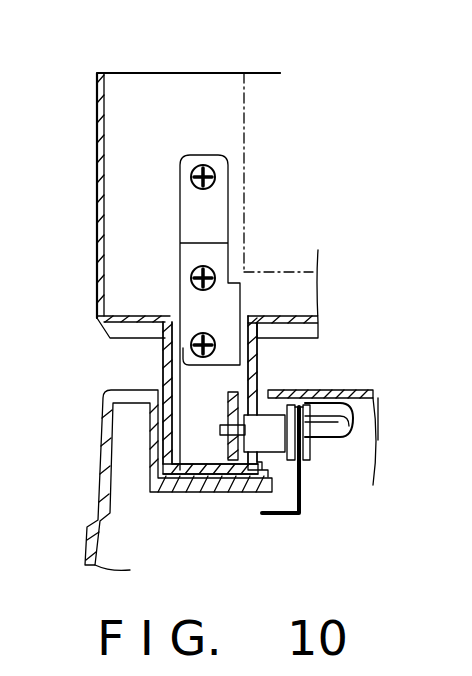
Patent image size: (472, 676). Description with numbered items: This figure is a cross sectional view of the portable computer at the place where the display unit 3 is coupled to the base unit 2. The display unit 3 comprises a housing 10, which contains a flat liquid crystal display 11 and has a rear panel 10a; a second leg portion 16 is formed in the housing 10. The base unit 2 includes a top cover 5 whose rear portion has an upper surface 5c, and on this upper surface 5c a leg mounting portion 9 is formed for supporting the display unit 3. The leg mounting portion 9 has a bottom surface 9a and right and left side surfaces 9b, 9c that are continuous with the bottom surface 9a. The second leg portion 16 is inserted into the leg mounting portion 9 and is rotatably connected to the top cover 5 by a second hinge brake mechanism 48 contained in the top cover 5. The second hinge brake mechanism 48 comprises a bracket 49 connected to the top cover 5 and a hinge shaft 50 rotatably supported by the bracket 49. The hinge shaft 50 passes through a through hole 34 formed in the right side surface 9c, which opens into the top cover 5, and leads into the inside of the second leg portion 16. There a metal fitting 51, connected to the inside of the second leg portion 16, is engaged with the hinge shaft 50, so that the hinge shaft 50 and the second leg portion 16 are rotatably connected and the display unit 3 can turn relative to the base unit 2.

The base unit 2 is at (92, 491).
The display unit 3 is at (96, 111).
The top cover 5 is at (100, 450).
The upper surface 5c is at (368, 394).
The leg mounting portion 9 is at (252, 462).
The bottom surface 9a is at (212, 470).
The left side surface 9b is at (165, 400).
The right side surface 9c is at (283, 392).
The housing 10 is at (125, 255).
The rear panel 10a is at (213, 73).
The liquid crystal display 11 is at (246, 133).
The second leg portion 16 is at (260, 392).
The through hole 34 is at (350, 390).
The second hinge brake mechanism 48 is at (302, 470).
The bracket 49 is at (346, 437).
The hinge shaft 50 is at (275, 438).
The metal fitting 51 is at (228, 384).